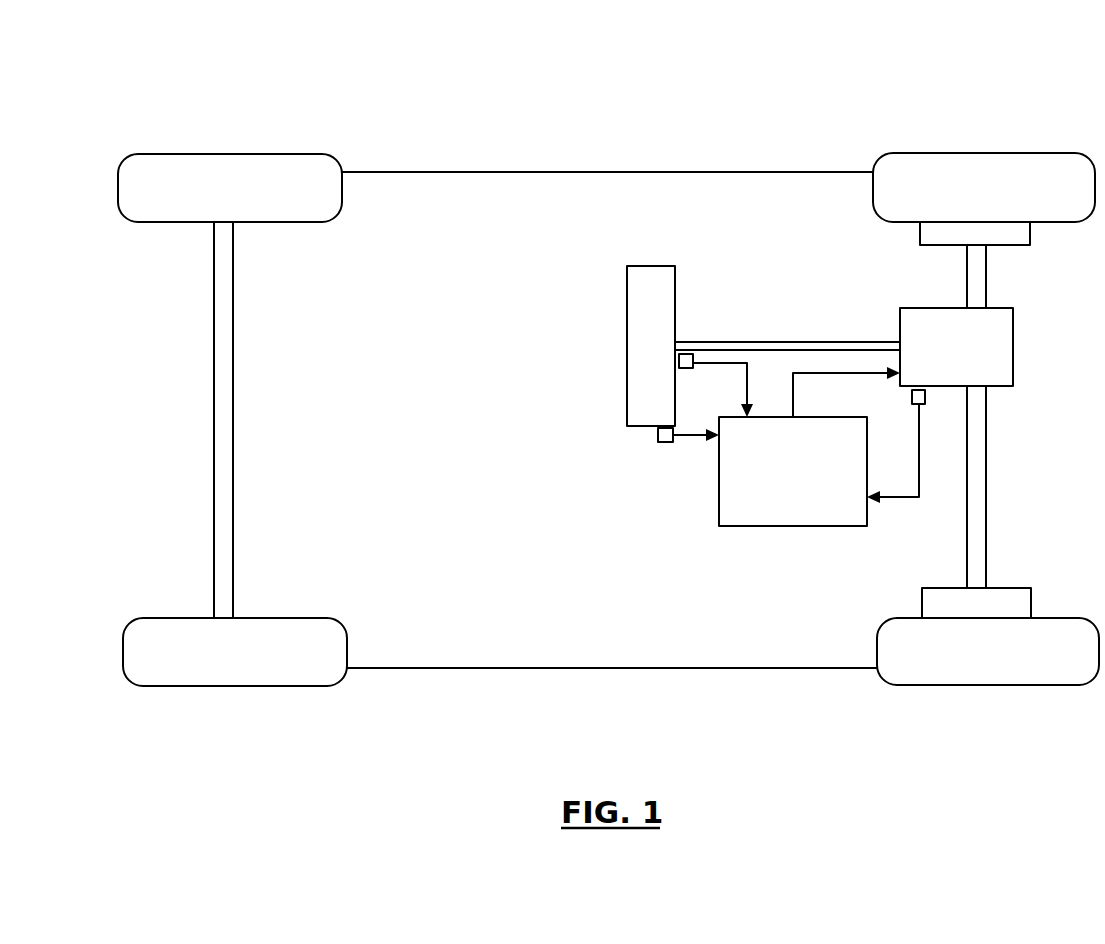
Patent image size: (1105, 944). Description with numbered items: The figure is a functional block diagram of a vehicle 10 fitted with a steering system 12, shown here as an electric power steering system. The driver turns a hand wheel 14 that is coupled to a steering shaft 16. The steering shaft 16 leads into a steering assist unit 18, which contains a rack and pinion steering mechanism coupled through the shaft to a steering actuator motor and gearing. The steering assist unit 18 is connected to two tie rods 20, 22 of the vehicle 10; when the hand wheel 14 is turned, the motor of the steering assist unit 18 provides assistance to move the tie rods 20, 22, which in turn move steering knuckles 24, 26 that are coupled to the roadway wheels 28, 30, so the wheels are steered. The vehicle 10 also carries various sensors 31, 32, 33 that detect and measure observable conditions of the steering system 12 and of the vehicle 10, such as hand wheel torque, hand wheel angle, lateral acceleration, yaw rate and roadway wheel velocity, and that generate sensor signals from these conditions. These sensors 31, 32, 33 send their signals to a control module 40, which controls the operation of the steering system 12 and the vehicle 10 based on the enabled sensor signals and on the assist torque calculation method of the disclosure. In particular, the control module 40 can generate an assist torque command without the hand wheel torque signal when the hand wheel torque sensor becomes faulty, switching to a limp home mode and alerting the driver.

The vehicle 10 is at (652, 68).
The steering system 12 is at (761, 236).
The hand wheel 14 is at (648, 266).
The steering shaft 16 is at (760, 342).
The steering assist unit 18 is at (1013, 345).
The tie rod 20 is at (986, 290).
The tie rod 22 is at (986, 460).
The steering knuckle 24 is at (920, 223).
The steering knuckle 26 is at (950, 588).
The roadway wheel 28 is at (1020, 153).
The roadway wheel 30 is at (1038, 618).
The sensor 31 is at (683, 368).
The sensor 32 is at (925, 398).
The sensor 33 is at (665, 442).
The control module 40 is at (811, 417).